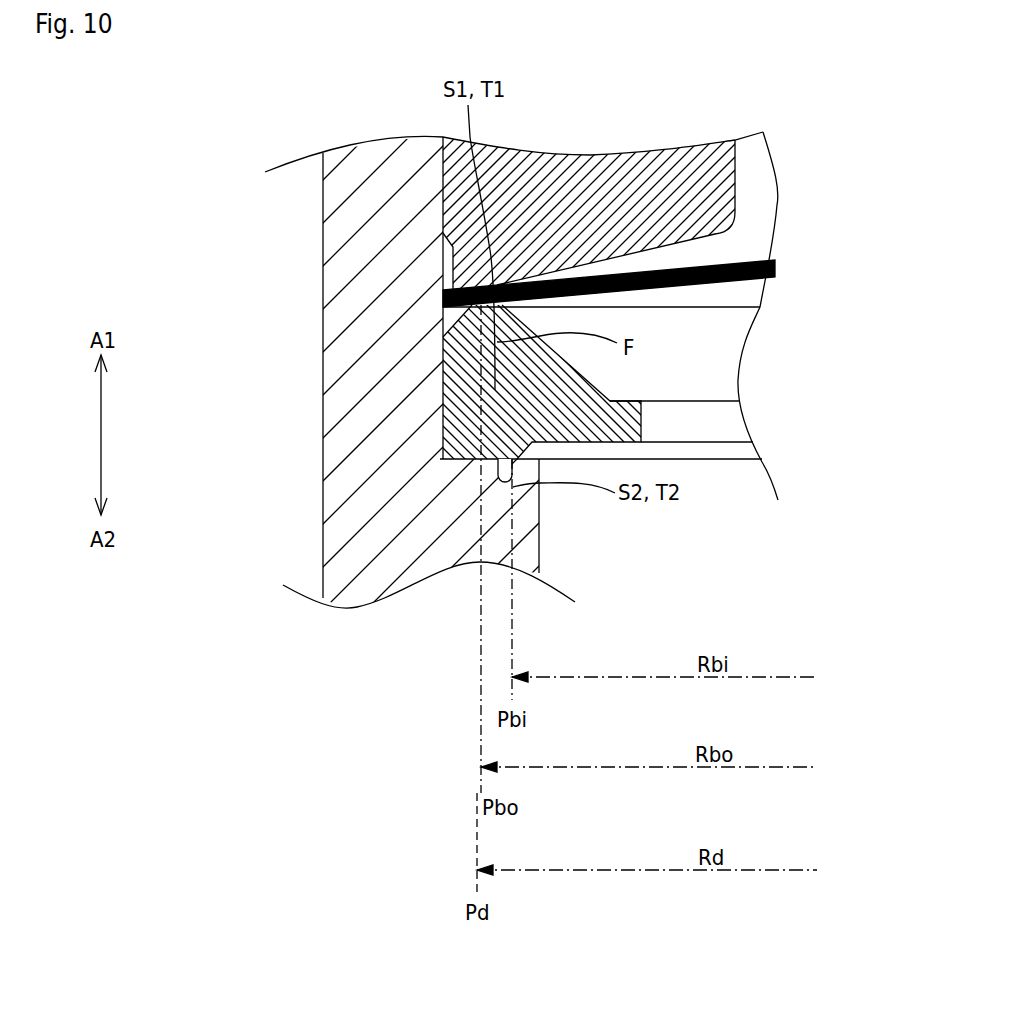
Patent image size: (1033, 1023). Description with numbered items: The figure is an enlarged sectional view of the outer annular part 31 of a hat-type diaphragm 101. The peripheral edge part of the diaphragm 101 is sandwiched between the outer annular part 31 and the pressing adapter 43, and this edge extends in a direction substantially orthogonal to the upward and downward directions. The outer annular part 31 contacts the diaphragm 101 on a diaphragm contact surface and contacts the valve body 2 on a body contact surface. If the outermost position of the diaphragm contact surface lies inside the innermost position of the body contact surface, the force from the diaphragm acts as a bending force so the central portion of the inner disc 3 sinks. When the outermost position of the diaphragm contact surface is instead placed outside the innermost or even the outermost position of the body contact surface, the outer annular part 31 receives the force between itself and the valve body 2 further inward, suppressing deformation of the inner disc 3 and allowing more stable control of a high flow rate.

The valve body 2 is at (347, 325).
The inner disc 3 is at (703, 443).
The outer annular part 31 is at (458, 428).
The pressing adapter 43 is at (617, 192).
The diaphragm 101 is at (745, 260).